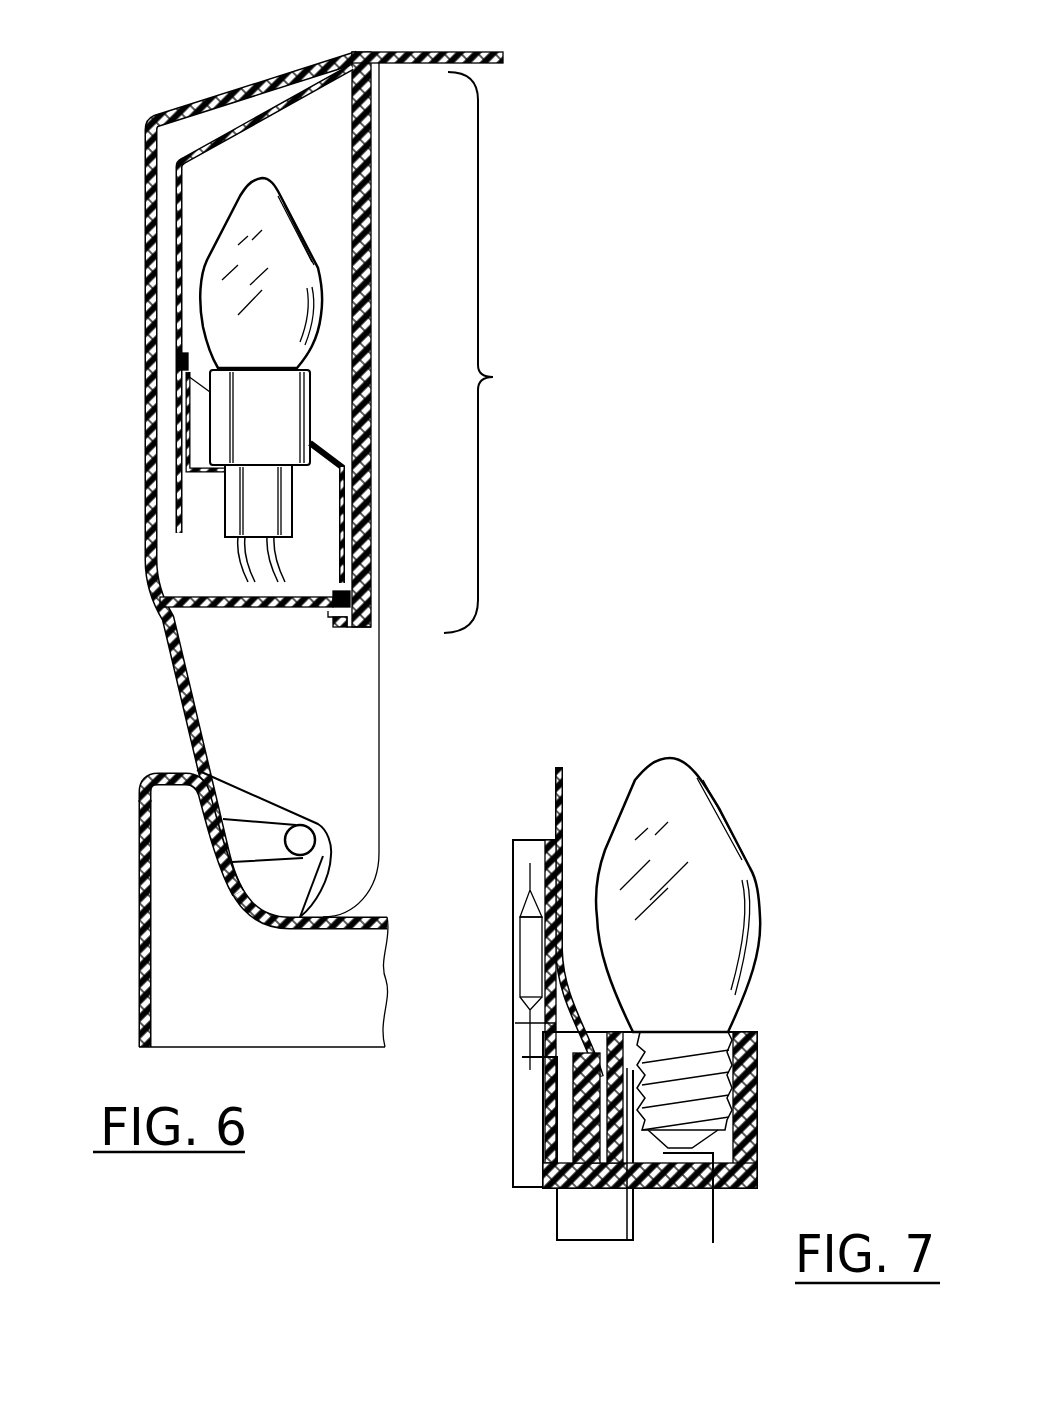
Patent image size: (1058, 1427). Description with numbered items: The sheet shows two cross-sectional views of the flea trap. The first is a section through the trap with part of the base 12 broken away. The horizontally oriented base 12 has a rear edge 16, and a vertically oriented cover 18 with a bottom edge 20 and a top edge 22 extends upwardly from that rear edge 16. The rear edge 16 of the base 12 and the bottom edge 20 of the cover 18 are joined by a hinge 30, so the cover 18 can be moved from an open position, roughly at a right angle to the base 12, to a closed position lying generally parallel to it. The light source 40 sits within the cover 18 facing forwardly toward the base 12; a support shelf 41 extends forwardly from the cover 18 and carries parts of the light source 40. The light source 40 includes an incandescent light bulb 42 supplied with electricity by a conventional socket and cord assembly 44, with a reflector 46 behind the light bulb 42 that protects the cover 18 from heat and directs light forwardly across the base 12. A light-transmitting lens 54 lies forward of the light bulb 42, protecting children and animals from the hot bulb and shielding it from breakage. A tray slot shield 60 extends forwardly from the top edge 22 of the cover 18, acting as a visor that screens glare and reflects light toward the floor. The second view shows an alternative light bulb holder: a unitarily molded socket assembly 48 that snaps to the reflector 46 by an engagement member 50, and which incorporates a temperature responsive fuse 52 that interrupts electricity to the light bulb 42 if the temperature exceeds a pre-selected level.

In FIG. 6, the base 12 is at (138, 1022).
In FIG. 6, the rear edge 16 is at (140, 795).
In FIG. 6, the cover 18 is at (145, 508).
In FIG. 6, the bottom edge 20 is at (363, 880).
In FIG. 6, the top edge 22 is at (160, 115).
In FIG. 6, the hinge 30 is at (323, 822).
In FIG. 6, the light source 40 is at (501, 352).
In FIG. 6, the support shelf 41 is at (237, 608).
In FIG. 6, the light bulb 42 is at (200, 303).
In FIG. 6, the socket and cord assembly 44 is at (217, 423).
In FIG. 6, the reflector 46 is at (177, 190).
In FIG. 7, the reflector 46 is at (563, 787).
In FIG. 7, the molded socket assembly 48 is at (757, 1050).
In FIG. 7, the engagement member 50 is at (643, 1188).
In FIG. 7, the temperature responsive fuse 52 is at (523, 953).
In FIG. 6, the lens 54 is at (378, 150).
In FIG. 6, the tray slot shield 60 is at (503, 57).